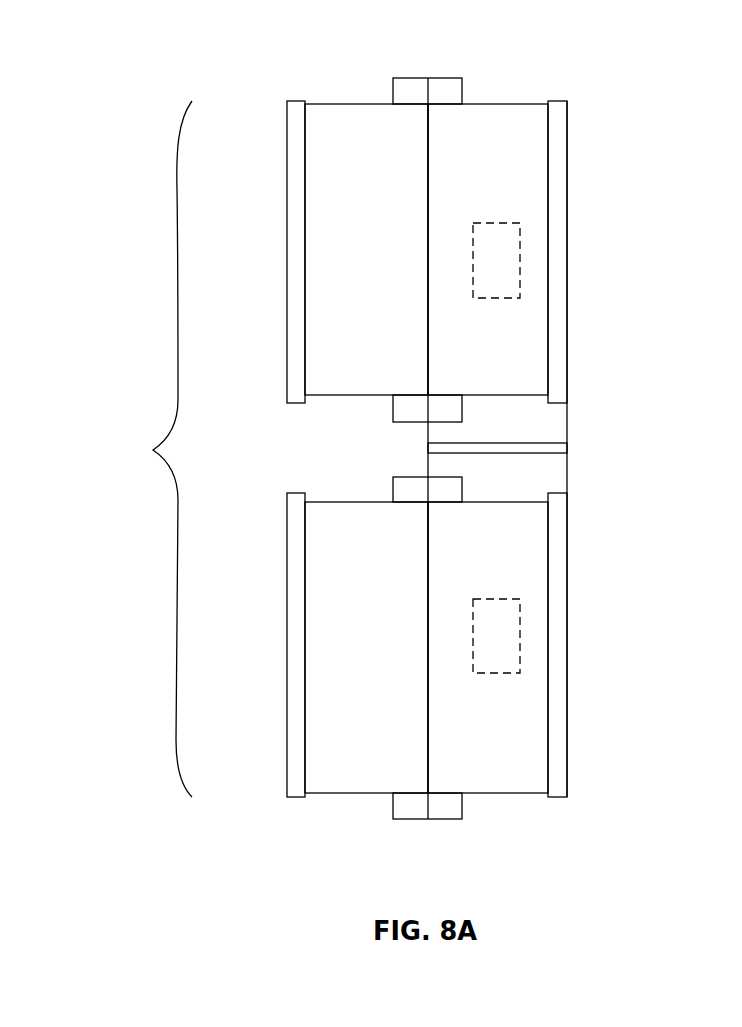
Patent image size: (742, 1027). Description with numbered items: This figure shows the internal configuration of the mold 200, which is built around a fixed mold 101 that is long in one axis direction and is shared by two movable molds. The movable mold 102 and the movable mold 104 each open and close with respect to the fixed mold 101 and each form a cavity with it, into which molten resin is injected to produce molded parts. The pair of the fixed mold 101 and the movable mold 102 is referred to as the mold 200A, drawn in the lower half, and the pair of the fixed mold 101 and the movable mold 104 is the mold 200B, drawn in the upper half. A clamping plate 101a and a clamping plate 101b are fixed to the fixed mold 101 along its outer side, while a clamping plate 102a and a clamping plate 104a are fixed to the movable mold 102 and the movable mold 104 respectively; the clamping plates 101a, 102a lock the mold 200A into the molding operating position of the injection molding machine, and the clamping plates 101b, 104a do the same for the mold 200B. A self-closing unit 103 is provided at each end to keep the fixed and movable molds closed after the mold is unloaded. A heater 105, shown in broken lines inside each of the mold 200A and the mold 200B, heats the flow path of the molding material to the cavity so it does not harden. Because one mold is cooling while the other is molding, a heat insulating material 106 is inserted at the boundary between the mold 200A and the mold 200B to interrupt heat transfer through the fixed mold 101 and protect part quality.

The mold 200 is at (335, 448).
The mold 200A is at (570, 762).
The mold 200B is at (570, 183).
The fixed mold 101 is at (497, 128).
The clamping plate 101a is at (557, 697).
The clamping plate 101b is at (557, 123).
The movable mold 102 is at (370, 765).
The clamping plate 102a is at (298, 638).
The self-closing unit 103 is at (447, 92).
The movable mold 104 is at (360, 125).
The clamping plate 104a is at (296, 252).
The heater 105 is at (520, 258).
The heat insulating material 106 is at (570, 447).